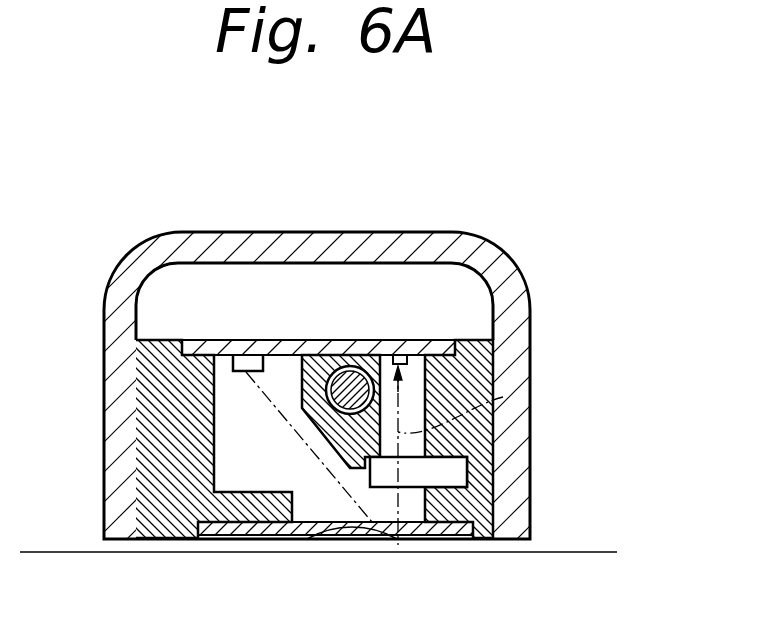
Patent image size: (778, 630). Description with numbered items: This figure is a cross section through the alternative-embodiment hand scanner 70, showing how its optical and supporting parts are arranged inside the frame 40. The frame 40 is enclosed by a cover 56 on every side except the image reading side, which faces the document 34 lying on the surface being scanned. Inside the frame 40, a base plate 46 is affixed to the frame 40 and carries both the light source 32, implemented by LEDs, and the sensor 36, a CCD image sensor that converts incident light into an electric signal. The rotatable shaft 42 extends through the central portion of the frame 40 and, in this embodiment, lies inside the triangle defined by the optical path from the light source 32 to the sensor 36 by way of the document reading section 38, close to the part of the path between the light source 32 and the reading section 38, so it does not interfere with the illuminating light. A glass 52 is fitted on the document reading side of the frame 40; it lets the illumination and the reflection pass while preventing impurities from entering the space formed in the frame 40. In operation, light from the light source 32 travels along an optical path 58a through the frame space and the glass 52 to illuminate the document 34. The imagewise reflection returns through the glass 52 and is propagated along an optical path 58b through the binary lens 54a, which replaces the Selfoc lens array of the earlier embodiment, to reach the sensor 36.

The hand scanner 70 is at (533, 255).
The frame 40 is at (143, 480).
The cover 56 is at (117, 312).
The light source 32 is at (248, 364).
The base plate 46 is at (295, 355).
The shaft 42 is at (347, 364).
The sensor 36 is at (402, 354).
The binary lens 54a is at (470, 470).
The optical path 58b is at (503, 397).
The optical path 58a is at (318, 465).
The glass 52 is at (210, 530).
The document reading section 38 is at (398, 542).
The document 34 is at (555, 552).